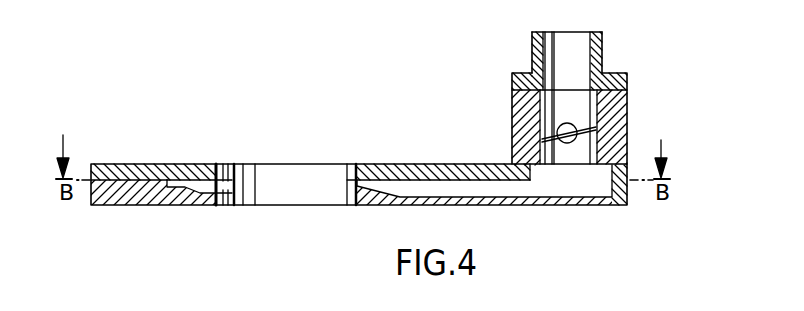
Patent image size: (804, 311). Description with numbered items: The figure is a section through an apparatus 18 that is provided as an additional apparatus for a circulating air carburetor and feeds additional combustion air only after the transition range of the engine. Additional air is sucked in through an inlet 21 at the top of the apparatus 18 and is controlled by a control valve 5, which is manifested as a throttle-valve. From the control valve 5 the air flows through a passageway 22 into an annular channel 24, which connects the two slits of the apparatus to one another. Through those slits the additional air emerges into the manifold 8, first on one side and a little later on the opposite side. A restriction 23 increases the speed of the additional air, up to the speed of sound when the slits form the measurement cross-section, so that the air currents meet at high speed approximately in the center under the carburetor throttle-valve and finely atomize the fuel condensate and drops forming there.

The apparatus 18 is at (126, 168).
The annular channel 24 is at (191, 186).
The manifold 8 is at (297, 193).
The restriction 23 is at (373, 190).
The passageway 22 is at (584, 186).
The inlet 21 is at (577, 70).
The control valve 5 is at (596, 129).